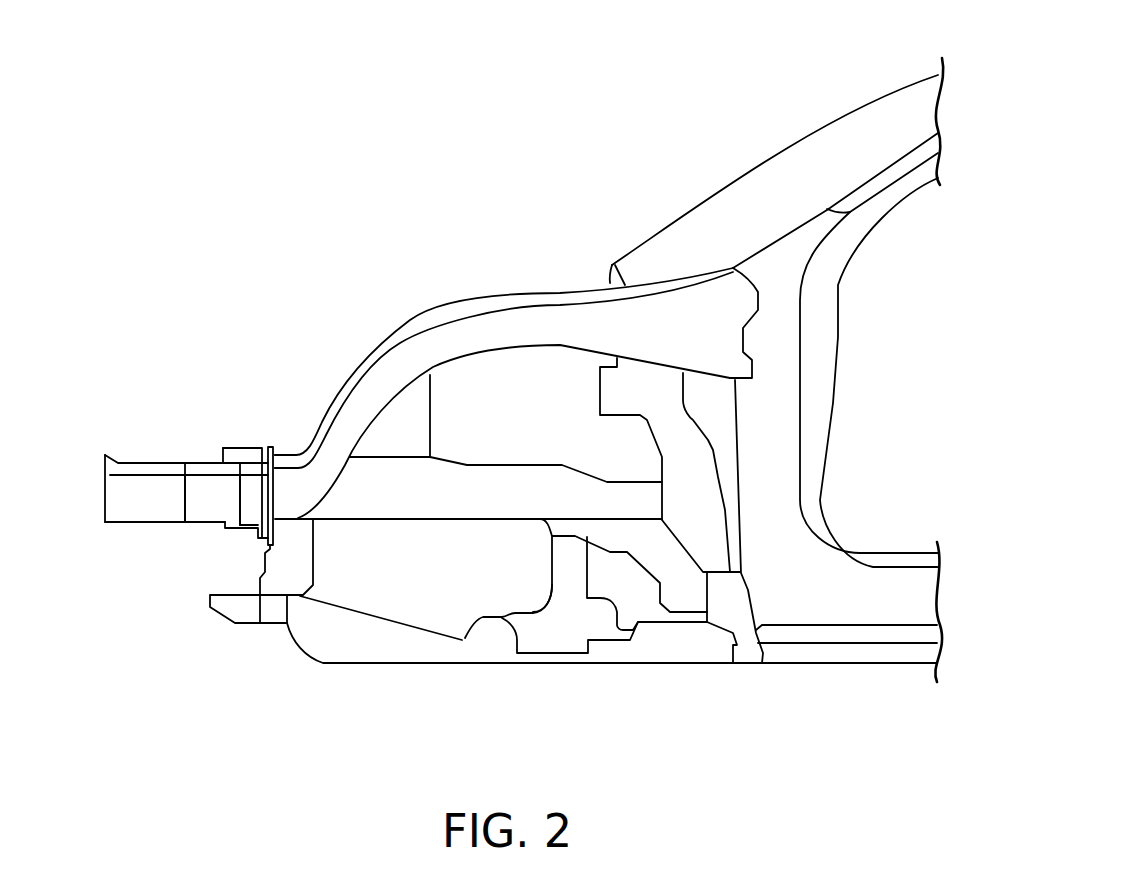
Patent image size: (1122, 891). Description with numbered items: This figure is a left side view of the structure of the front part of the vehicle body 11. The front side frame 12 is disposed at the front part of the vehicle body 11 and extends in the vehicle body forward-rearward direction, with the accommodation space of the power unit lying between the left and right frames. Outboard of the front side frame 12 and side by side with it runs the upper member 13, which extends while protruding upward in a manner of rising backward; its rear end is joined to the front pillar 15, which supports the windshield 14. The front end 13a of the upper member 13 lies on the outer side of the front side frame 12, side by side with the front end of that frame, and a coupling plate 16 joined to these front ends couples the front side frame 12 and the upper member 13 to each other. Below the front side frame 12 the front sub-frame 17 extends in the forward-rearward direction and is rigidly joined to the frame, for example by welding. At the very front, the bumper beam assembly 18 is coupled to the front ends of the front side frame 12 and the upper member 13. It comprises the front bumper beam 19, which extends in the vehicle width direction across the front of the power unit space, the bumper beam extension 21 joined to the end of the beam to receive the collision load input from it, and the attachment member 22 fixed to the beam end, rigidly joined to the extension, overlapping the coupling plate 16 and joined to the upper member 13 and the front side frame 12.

The vehicle body 11 is at (517, 277).
The front side frame 12 is at (367, 517).
The upper member 13 is at (367, 372).
The front end of upper member 13a is at (273, 483).
The windshield 14 is at (760, 163).
The front pillar 15 is at (785, 337).
The coupling plate 16 is at (272, 447).
The front sub-frame 17 is at (440, 653).
The bumper beam assembly 18 is at (93, 455).
The front bumper beam 19 is at (125, 522).
The bumper beam extension 21 is at (205, 512).
The attachment member 22 is at (255, 497).